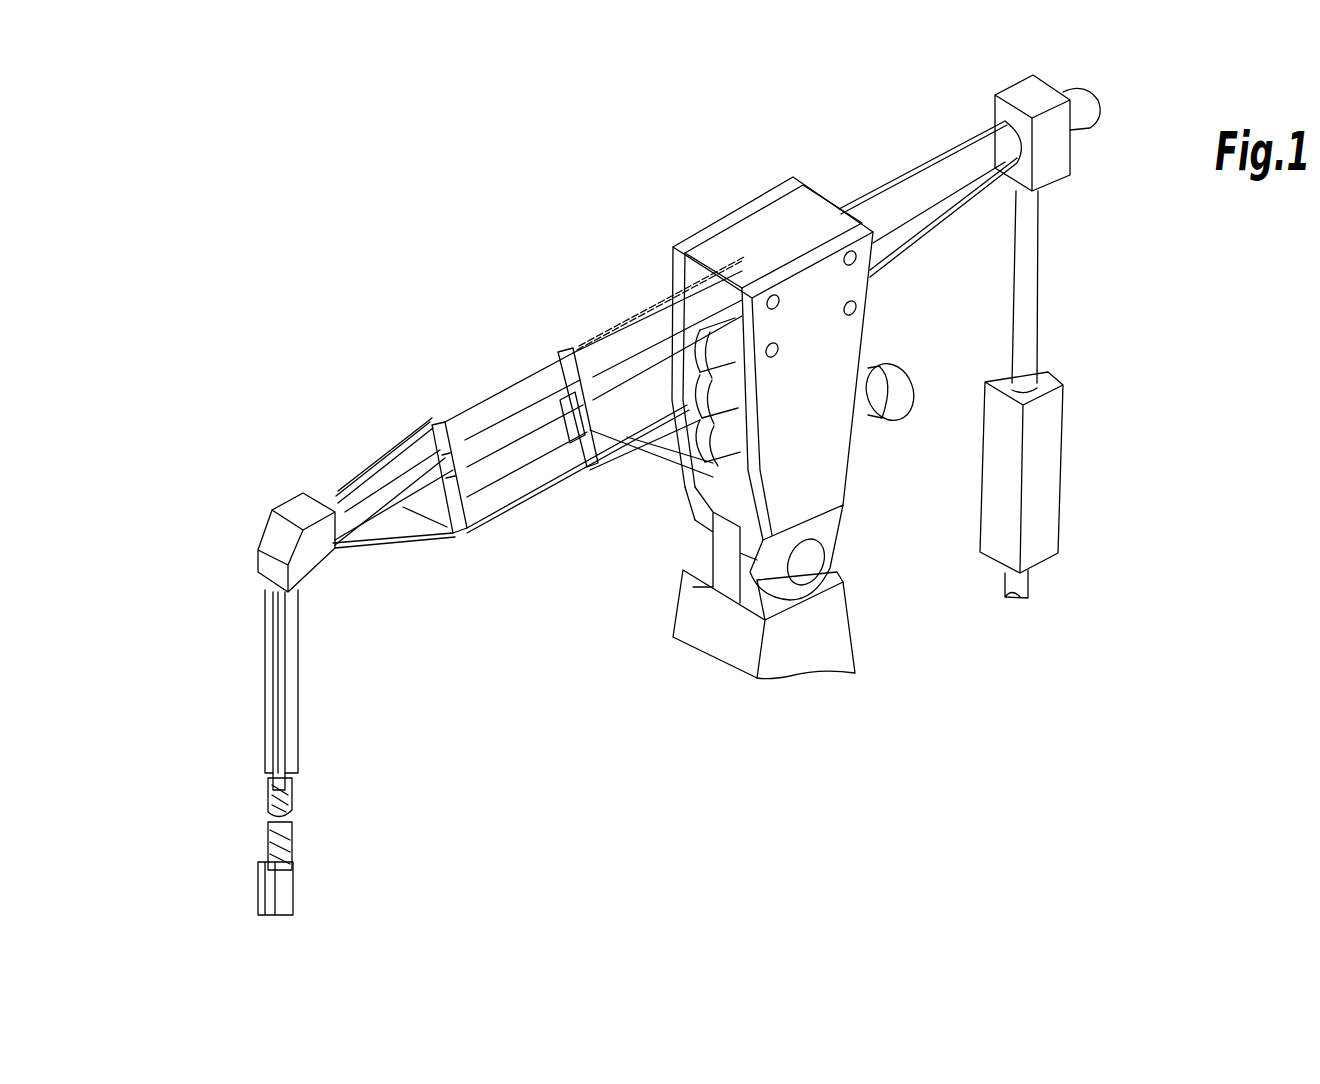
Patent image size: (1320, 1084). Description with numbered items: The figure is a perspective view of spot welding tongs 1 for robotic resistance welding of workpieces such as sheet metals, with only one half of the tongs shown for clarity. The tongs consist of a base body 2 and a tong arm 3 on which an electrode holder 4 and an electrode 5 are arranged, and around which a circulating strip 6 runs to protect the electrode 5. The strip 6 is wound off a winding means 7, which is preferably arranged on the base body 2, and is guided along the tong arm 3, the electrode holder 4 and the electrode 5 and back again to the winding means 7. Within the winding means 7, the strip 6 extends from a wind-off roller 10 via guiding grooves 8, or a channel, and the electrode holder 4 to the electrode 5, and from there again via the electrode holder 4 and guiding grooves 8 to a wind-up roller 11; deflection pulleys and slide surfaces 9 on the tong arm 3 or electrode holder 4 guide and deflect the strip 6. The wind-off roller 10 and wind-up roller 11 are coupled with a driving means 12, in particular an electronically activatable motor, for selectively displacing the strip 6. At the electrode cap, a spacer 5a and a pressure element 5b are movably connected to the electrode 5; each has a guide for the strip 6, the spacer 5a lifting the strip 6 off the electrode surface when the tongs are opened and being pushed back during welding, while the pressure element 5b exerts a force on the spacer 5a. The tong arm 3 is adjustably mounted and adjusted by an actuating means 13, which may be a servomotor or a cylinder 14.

The spot welding tongs 1 is at (225, 292).
The base body 2 is at (828, 308).
The tong arm 3 is at (500, 430).
The electrode holder 4 is at (283, 628).
The electrode 5 is at (243, 800).
The spacer 5a is at (268, 812).
The pressure element 5b is at (272, 790).
The strip 6 is at (655, 330).
The winding means 7 is at (670, 476).
The guiding grooves 8 is at (428, 440).
The deflection pulleys and slide surfaces 9 is at (558, 345).
The wind-off roller 10 is at (717, 375).
The wind-up roller 11 is at (690, 503).
The driving means 12 is at (888, 395).
The actuating means 13 is at (1113, 470).
The cylinder 14 is at (1043, 540).